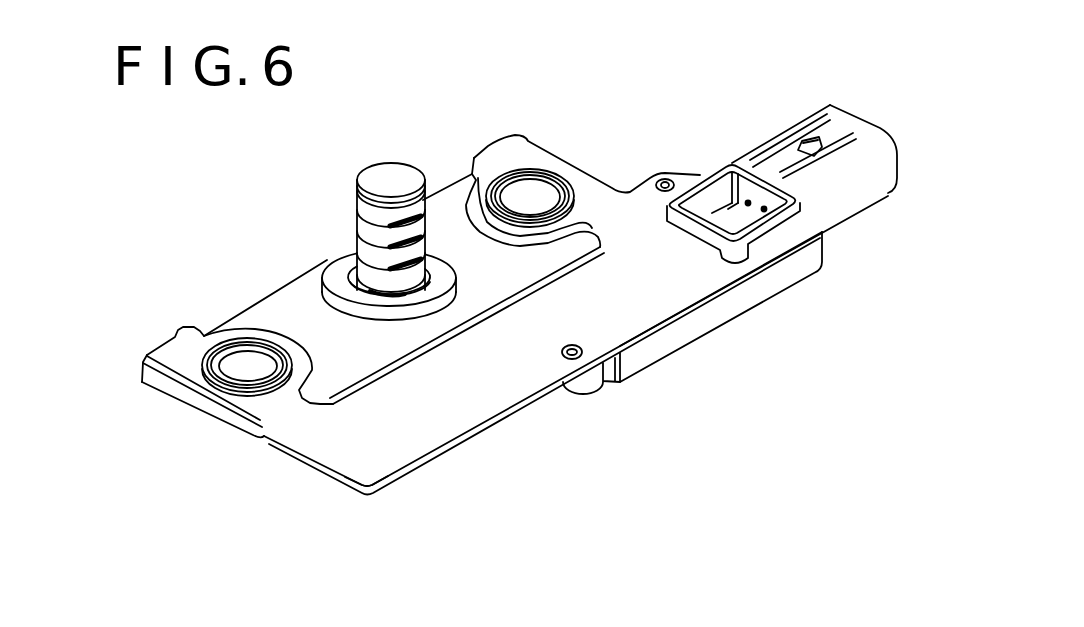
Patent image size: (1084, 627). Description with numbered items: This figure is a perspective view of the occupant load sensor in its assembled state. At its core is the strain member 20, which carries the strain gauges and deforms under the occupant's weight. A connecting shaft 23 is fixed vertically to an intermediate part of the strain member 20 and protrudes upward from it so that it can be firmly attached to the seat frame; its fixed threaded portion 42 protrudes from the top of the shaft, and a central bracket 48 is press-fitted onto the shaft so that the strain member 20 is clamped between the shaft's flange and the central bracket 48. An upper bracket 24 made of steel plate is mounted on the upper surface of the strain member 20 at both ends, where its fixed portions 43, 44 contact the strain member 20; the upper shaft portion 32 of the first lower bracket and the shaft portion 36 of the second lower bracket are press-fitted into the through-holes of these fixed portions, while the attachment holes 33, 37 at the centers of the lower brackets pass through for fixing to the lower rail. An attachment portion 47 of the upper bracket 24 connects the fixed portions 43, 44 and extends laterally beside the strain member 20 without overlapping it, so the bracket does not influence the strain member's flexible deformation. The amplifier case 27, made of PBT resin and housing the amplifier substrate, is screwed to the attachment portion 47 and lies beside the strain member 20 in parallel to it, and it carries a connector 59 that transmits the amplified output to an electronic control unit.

The strain member 20 is at (443, 198).
The connecting shaft 23 is at (385, 176).
The upper bracket 24 is at (528, 367).
The amplifier case 27 is at (668, 343).
The upper shaft portion 32 is at (220, 375).
The attachment hole 33 is at (247, 357).
The shaft portion 36 is at (557, 180).
The attachment hole 37 is at (532, 193).
The fixed threaded portion 42 is at (360, 215).
The fixed portion 43 is at (173, 348).
The fixed portion 44 is at (505, 150).
The attachment portion 47 is at (365, 473).
The central bracket 48 is at (332, 275).
The connector 59 is at (852, 197).